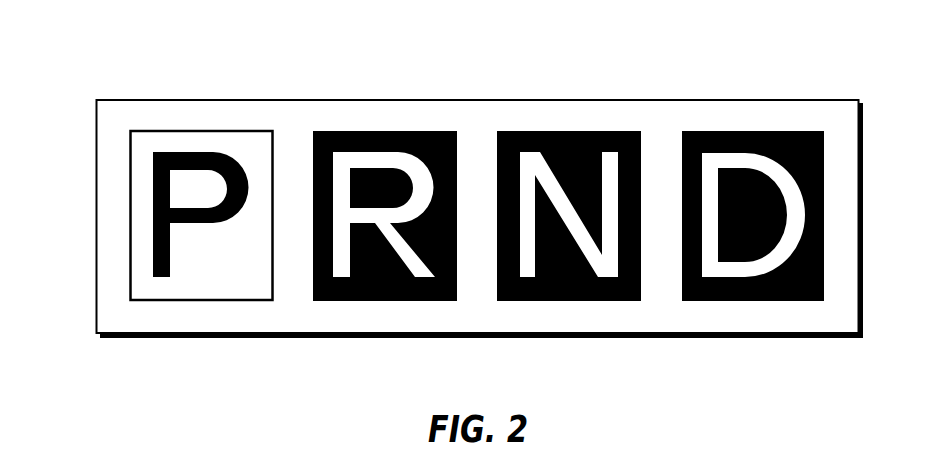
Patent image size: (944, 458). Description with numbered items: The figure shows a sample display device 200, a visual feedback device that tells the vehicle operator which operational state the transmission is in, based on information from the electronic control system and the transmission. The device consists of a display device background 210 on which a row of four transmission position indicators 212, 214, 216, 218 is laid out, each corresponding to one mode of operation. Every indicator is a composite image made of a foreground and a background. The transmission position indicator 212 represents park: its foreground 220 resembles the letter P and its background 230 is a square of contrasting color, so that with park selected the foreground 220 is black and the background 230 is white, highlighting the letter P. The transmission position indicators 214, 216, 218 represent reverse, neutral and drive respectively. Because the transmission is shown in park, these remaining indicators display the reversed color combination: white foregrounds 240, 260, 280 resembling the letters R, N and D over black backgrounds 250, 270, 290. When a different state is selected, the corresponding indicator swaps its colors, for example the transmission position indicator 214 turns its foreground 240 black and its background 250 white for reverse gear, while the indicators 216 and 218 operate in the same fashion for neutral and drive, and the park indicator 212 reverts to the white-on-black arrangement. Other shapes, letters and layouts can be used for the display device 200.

The display device 200 is at (455, 203).
The display device background 210 is at (96, 120).
The transmission position indicator 212 is at (202, 225).
The transmission position indicator 214 is at (385, 225).
The transmission position indicator 216 is at (563, 225).
The transmission position indicator 218 is at (753, 225).
The foreground 220 is at (178, 152).
The background 230 is at (202, 131).
The foreground 240 is at (375, 152).
The background 250 is at (398, 131).
The foreground 260 is at (530, 152).
The background 270 is at (595, 131).
The foreground 280 is at (742, 153).
The background 290 is at (767, 131).